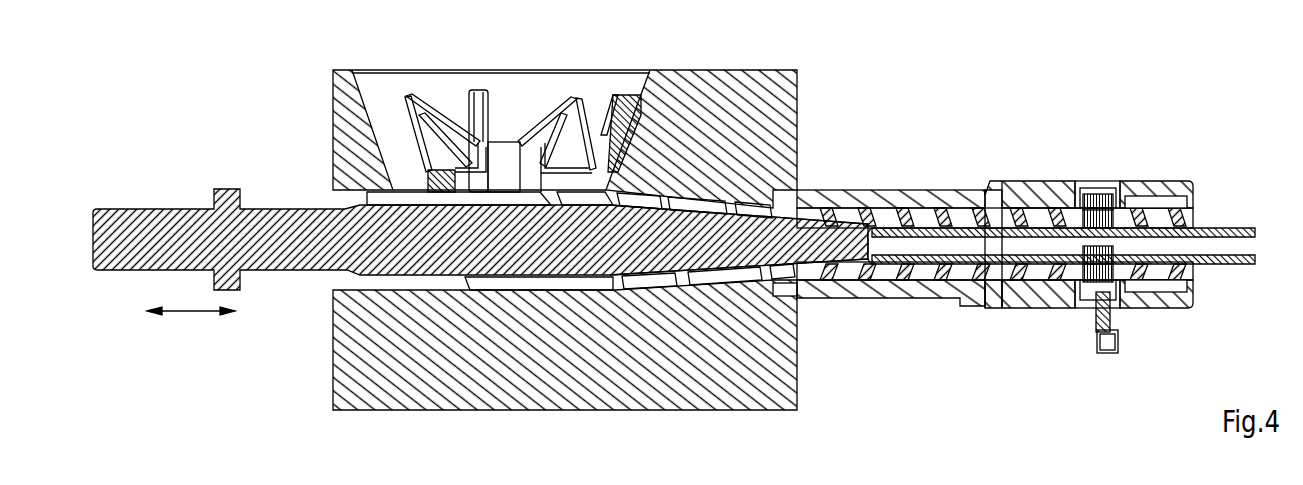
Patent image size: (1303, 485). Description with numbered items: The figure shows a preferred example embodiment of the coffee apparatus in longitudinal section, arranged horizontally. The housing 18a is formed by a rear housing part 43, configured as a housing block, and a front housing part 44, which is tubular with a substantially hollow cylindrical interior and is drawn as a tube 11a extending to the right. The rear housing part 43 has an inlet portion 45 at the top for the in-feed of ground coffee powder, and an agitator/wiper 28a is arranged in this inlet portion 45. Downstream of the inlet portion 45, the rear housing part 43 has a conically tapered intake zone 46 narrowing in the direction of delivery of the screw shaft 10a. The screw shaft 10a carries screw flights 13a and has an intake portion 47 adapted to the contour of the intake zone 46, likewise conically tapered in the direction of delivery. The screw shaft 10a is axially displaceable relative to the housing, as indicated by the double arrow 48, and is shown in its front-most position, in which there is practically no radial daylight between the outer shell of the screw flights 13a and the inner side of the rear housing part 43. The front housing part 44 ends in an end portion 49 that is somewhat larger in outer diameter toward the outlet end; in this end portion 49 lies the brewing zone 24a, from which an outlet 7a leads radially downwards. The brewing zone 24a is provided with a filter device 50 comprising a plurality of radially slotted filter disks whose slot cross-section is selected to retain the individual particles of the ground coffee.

The outlet 7a is at (1140, 340).
The screw shaft 10a is at (292, 208).
The tube 11a is at (796, 300).
The screw flights 13a is at (477, 282).
The housing 18a is at (820, 83).
The brewing zone 24a is at (1098, 158).
The agitator/wiper 28a is at (476, 92).
The rear housing part 43 is at (757, 86).
The front housing part 44 is at (1002, 158).
The inlet portion 45 is at (519, 88).
The intake zone 46 is at (716, 212).
The intake portion 47 is at (677, 285).
The axial displacement indication 48 is at (189, 318).
The end portion 49 is at (1176, 180).
The filter device 50 is at (1090, 300).